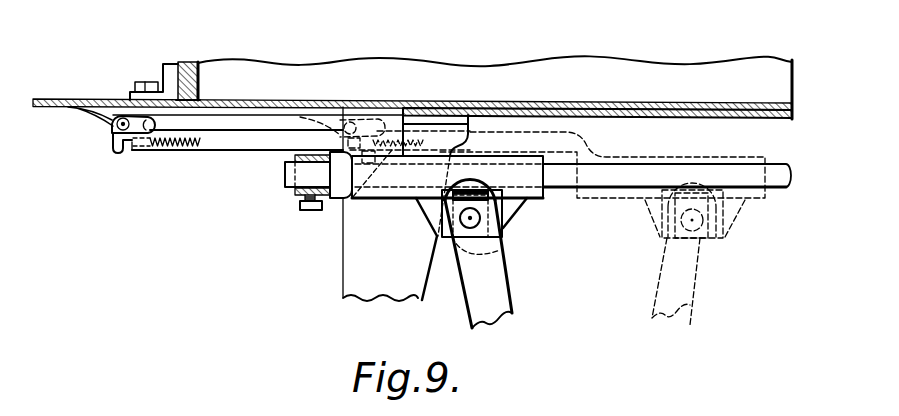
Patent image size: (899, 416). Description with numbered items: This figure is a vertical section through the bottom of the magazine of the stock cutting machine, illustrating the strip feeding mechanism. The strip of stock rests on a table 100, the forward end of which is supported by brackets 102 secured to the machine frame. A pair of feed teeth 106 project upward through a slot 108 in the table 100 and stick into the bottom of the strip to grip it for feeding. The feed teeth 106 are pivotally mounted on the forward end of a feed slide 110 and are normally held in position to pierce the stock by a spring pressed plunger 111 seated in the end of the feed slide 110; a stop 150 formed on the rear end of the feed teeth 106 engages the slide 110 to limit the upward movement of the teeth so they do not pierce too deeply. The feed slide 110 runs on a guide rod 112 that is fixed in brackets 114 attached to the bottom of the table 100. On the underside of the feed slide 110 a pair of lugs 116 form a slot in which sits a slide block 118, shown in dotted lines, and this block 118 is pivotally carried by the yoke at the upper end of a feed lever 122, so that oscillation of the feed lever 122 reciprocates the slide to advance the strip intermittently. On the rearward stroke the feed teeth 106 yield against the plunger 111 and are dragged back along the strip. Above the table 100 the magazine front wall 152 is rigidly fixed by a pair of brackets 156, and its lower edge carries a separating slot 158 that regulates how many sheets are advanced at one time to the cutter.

The table 100 is at (687, 118).
The brackets 102 is at (344, 296).
The feed teeth 106 is at (72, 111).
The slot 108 is at (252, 114).
The feed slide 110 is at (252, 140).
The spring pressed plunger 111 is at (120, 150).
The guide rod 112 is at (622, 173).
The brackets 114 is at (297, 191).
The lugs 116 is at (443, 229).
The slide block 118 is at (500, 253).
The feed lever 122 is at (498, 306).
The stop 150 is at (147, 124).
The front wall 152 is at (187, 61).
The brackets 156 is at (163, 71).
The separating slot 158 is at (199, 98).